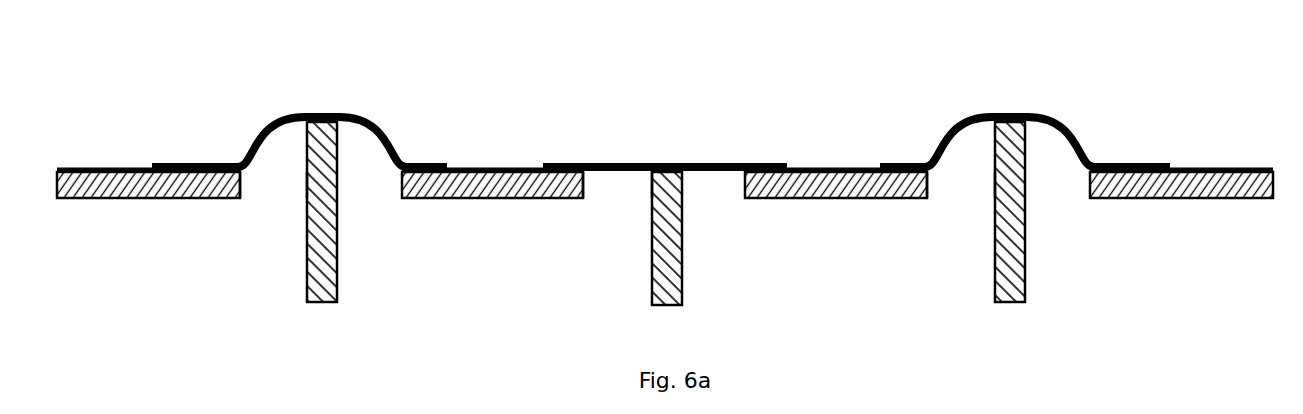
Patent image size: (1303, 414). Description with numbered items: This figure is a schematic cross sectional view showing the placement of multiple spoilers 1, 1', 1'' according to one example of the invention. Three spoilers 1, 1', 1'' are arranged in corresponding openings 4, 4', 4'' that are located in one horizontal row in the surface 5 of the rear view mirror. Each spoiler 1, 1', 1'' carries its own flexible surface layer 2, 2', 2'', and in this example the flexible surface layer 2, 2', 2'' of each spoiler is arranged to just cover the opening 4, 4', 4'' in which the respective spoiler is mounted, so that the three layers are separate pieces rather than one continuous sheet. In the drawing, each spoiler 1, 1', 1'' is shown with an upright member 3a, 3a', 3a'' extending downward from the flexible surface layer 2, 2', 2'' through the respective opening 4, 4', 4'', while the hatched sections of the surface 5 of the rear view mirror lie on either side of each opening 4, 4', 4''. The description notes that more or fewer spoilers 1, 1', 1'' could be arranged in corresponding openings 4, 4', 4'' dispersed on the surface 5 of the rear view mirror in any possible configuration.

The spoiler 1 is at (300, 171).
The spoiler 1' is at (662, 179).
The spoiler 1'' is at (1025, 171).
The flexible surface layer 2 is at (299, 116).
The flexible surface layer 2' is at (662, 125).
The flexible surface layer 2'' is at (1025, 119).
The post 3a is at (285, 220).
The post 3a' is at (627, 238).
The post 3a'' is at (974, 212).
The opening 4 is at (259, 216).
The opening 4' is at (600, 215).
The opening 4'' is at (948, 213).
The surface of the rear view mirror 5 is at (142, 213).